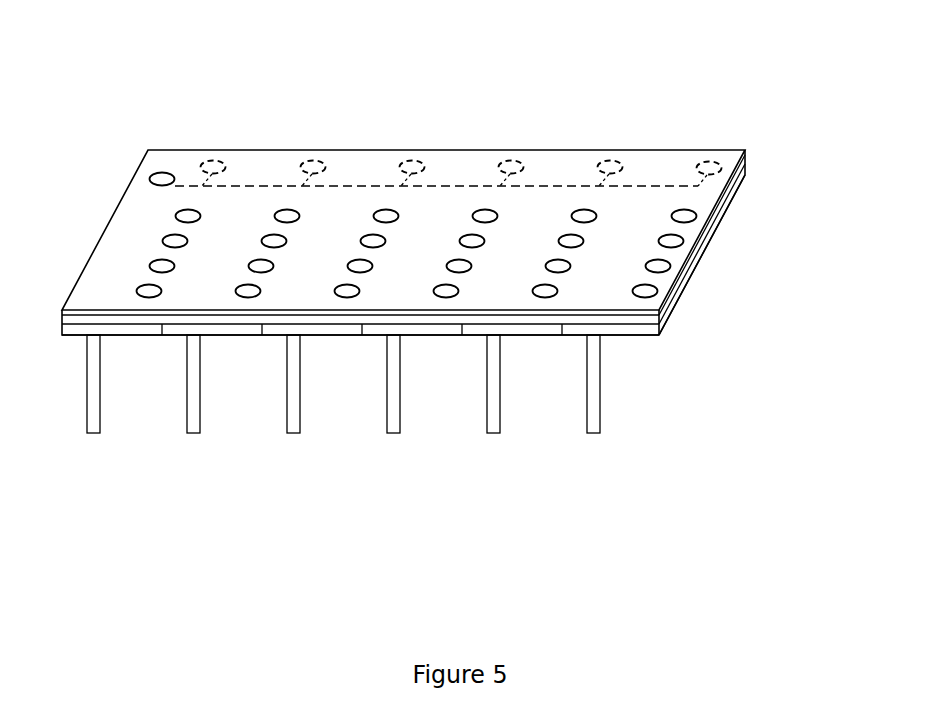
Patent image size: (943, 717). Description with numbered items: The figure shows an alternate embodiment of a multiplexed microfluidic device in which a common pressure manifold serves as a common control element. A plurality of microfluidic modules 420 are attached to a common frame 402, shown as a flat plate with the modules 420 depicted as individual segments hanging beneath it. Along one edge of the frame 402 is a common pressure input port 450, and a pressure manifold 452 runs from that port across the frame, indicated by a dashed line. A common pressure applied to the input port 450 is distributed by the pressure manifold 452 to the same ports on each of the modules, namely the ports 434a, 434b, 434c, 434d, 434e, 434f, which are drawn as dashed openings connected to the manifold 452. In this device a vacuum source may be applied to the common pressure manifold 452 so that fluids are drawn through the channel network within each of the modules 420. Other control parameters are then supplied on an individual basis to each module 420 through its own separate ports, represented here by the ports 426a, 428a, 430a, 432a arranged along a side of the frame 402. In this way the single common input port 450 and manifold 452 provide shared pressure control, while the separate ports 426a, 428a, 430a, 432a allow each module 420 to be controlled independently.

The common frame 402 is at (711, 202).
The microfluidic modules 420 is at (635, 338).
The port 426a is at (664, 302).
The port 428a is at (676, 277).
The port 430a is at (689, 252).
The port 432a is at (701, 227).
The port 434a is at (709, 158).
The port 434b is at (610, 158).
The port 434c is at (511, 158).
The port 434d is at (412, 158).
The port 434e is at (313, 158).
The port 434f is at (213, 158).
The common pressure input port 450 is at (148, 173).
The pressure manifold 452 is at (350, 185).